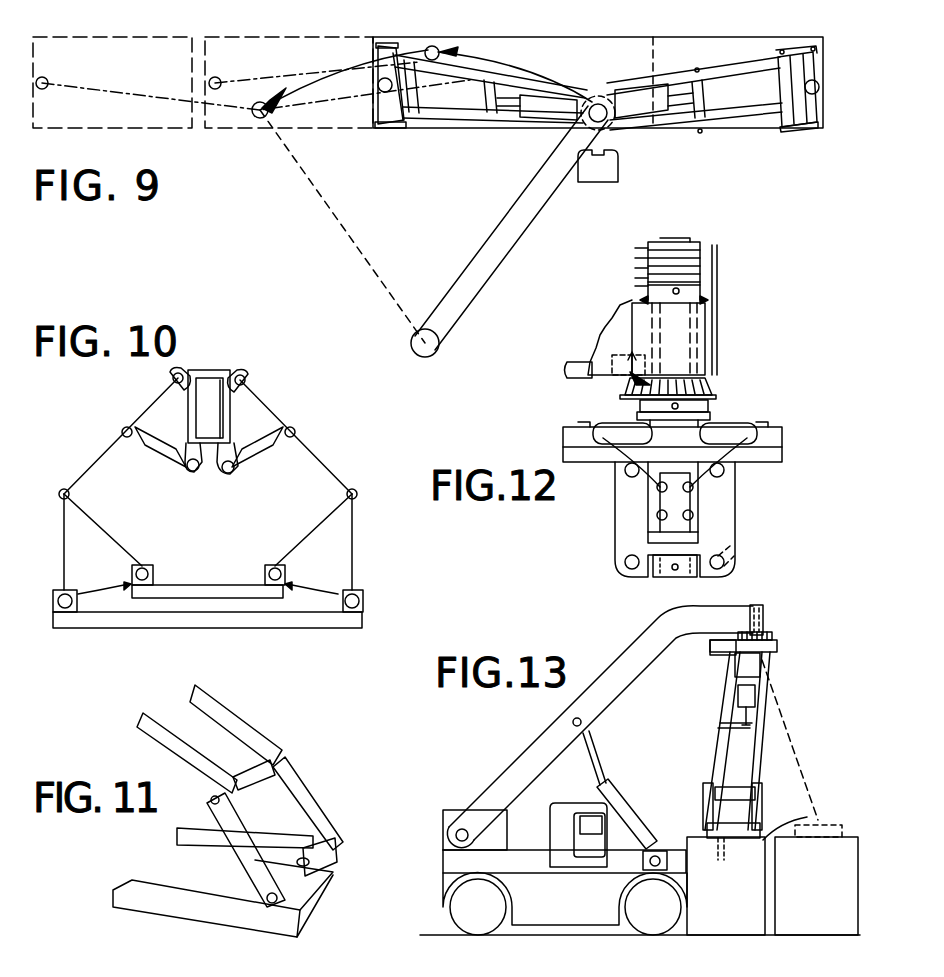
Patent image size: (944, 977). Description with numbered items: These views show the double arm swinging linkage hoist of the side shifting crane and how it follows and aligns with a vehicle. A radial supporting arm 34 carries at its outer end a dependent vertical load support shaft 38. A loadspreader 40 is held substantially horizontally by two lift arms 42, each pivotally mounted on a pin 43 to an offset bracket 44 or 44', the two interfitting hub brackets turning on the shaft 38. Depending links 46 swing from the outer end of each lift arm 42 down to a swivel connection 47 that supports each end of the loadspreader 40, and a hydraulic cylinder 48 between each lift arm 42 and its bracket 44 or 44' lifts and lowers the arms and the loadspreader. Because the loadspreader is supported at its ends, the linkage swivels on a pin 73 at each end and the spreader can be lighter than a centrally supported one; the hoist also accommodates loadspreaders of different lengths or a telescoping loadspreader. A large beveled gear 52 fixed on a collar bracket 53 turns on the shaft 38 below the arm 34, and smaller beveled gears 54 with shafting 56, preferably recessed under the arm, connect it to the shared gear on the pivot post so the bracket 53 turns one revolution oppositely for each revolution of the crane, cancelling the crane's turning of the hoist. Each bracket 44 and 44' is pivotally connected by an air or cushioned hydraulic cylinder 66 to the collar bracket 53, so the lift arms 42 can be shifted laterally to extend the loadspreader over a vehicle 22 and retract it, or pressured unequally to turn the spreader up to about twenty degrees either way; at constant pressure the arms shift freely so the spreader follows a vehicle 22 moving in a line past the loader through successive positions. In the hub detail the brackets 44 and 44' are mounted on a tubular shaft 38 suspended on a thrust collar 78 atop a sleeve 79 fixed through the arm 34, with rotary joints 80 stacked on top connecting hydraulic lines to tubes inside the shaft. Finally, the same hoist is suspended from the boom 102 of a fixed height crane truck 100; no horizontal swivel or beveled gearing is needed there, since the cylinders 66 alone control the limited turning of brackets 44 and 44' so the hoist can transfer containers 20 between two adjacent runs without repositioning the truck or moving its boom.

In FIG. 13, the container 20 is at (807, 827).
In FIG. 9, the vehicle 22 is at (119, 38).
In FIG. 9, the radial supporting arm 34 is at (543, 213).
In FIG. 12, the radial supporting arm 34 is at (607, 333).
In FIG. 12, the load support shaft 38 is at (660, 512).
In FIG. 13, the load support shaft 38 is at (773, 598).
In FIG. 9, the loadspreader 40 is at (219, 34).
In FIG. 10, the loadspreader 40 is at (232, 612).
In FIG. 11, the loadspreader 40 is at (134, 878).
In FIG. 13, the loadspreader 40 is at (688, 836).
In FIG. 9, the lift arm 42 is at (420, 127).
In FIG. 10, the lift arm 42 is at (104, 455).
In FIG. 11, the lift arm 42 is at (236, 718).
In FIG. 13, the lift arm 42 is at (770, 745).
In FIG. 12, the pin 43 is at (628, 475).
In FIG. 10, the offset bracket 44 is at (249, 422).
In FIG. 12, the offset bracket 44 is at (701, 519).
In FIG. 13, the offset bracket 44 is at (762, 640).
In FIG. 10, the offset bracket 44' is at (191, 412).
In FIG. 12, the offset bracket 44' is at (634, 502).
In FIG. 9, the depending link 46 is at (404, 47).
In FIG. 10, the depending link 46 is at (63, 552).
In FIG. 11, the depending link 46 is at (310, 790).
In FIG. 13, the depending link 46 is at (761, 796).
In FIG. 9, the swivel connection 47 is at (383, 105).
In FIG. 10, the swivel connection 47 is at (160, 546).
In FIG. 11, the swivel connection 47 is at (330, 862).
In FIG. 9, the hydraulic cylinder 48 is at (524, 118).
In FIG. 10, the hydraulic cylinder 48 is at (150, 455).
In FIG. 13, the hydraulic cylinder 48 is at (752, 693).
In FIG. 12, the beveled gear 52 is at (713, 382).
In FIG. 9, the bracket 53 is at (613, 182).
In FIG. 12, the bracket 53 is at (716, 406).
In FIG. 13, the bracket 53 is at (722, 653).
In FIG. 12, the beveled gear 54 is at (626, 376).
In FIG. 12, the shafting 56 is at (570, 368).
In FIG. 12, the cylinder 66 is at (597, 424).
In FIG. 13, the cylinder 66 is at (712, 640).
In FIG. 9, the pin 73 is at (378, 85).
In FIG. 11, the pin 73 is at (310, 868).
In FIG. 12, the thrust collar 78 is at (640, 300).
In FIG. 12, the sleeve 79 is at (700, 331).
In FIG. 12, the rotary joints 80 is at (703, 280).
In FIG. 13, the crane truck 100 is at (505, 778).
In FIG. 13, the boom 102 is at (603, 717).